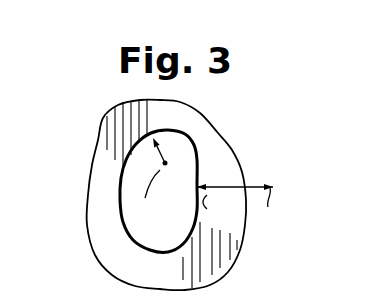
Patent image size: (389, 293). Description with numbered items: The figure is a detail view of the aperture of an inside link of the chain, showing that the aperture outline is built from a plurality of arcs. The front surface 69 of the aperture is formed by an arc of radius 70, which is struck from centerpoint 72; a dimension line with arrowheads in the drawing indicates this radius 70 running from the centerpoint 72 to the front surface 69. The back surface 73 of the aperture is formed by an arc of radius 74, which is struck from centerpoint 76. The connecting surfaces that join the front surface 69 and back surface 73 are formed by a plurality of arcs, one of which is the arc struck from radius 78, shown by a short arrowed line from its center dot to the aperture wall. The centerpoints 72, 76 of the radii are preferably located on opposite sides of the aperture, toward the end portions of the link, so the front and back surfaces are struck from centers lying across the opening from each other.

The front surface 69 is at (197, 165).
The radius 70 is at (227, 187).
The centerpoint 72 is at (275, 216).
The back surface 73 is at (197, 188).
The radius 74 is at (160, 198).
The centerpoint 76 is at (220, 206).
The radius 78 is at (158, 148).